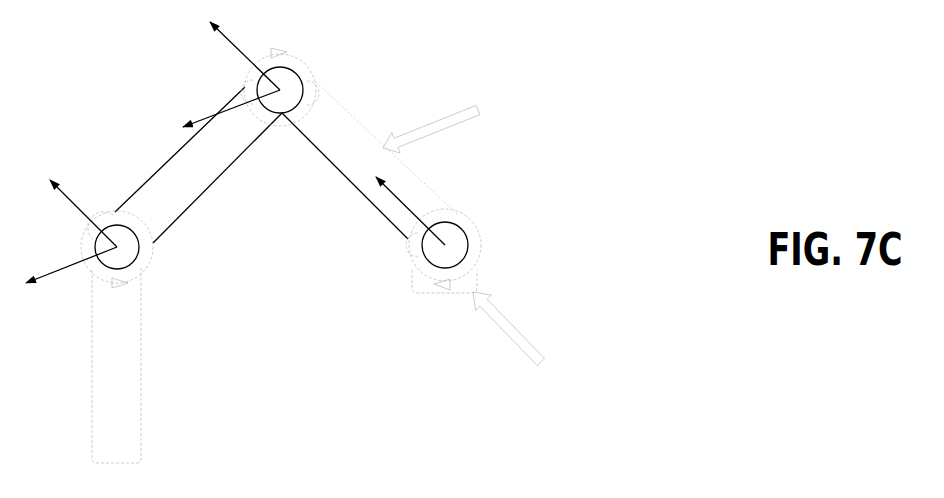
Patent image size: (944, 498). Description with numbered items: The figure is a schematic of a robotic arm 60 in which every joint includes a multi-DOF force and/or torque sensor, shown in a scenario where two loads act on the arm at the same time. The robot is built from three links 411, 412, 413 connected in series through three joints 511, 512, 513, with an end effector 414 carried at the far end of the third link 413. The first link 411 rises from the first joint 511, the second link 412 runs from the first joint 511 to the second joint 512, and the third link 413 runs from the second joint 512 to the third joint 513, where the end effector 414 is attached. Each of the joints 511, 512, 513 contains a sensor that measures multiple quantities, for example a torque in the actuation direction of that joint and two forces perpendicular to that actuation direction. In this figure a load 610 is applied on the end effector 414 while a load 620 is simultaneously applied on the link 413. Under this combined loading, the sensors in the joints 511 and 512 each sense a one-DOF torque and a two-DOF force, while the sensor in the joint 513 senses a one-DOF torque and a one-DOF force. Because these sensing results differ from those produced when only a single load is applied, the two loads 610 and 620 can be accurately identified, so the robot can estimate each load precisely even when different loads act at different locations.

The robotic arm 60 is at (128, 135).
The link 411 is at (116, 365).
The link 412 is at (198, 165).
The link 413 is at (369, 160).
The end effector 414 is at (428, 295).
The joint 511 is at (138, 267).
The joint 512 is at (297, 73).
The joint 513 is at (462, 231).
The load 610 is at (530, 339).
The load 620 is at (453, 121).